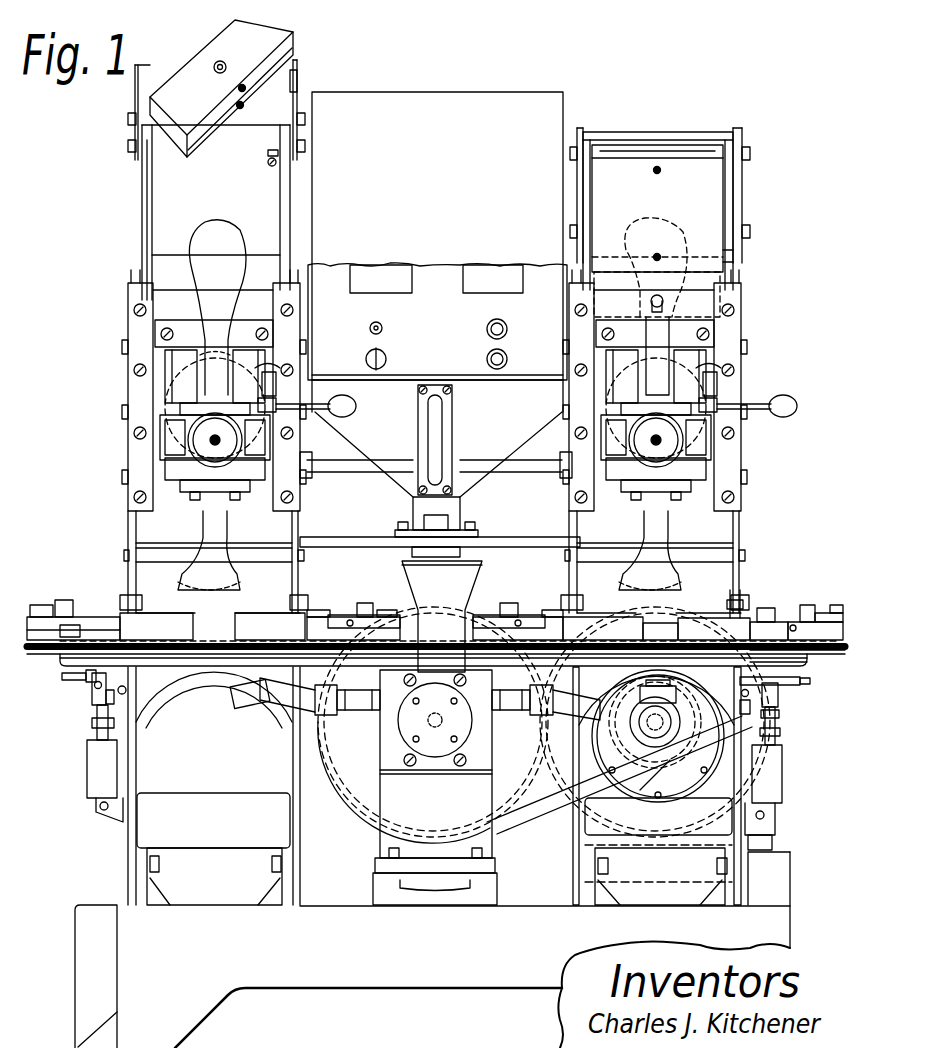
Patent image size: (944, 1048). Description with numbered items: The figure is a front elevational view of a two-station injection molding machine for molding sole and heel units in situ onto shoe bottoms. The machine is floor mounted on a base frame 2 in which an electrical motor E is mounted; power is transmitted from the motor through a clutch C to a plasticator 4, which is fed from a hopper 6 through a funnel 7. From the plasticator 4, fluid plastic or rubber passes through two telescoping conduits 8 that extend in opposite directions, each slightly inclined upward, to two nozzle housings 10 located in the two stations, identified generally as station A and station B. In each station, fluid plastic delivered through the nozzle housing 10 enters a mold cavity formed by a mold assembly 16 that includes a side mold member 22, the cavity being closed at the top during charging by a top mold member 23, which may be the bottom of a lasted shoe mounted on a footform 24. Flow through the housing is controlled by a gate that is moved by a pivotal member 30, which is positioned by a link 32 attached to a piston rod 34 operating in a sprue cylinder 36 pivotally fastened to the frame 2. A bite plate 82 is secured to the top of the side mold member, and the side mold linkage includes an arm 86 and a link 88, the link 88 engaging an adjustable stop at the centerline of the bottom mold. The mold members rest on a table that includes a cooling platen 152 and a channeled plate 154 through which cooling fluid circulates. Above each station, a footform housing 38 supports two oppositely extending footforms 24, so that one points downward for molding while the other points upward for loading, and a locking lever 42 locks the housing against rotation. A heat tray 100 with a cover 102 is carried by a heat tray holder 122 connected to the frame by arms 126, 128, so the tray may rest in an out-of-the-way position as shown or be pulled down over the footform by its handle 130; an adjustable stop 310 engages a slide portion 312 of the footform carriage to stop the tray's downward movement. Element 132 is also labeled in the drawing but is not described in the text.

The base frame 2 is at (748, 527).
The plasticator 4 is at (385, 745).
The hopper 6 is at (467, 478).
The funnel 7 is at (470, 585).
The telescoping conduits 8 is at (510, 712).
The nozzle housing 10 is at (662, 758).
The mold assembly 16 is at (763, 596).
The side mold member 22 is at (724, 610).
The top mold member 23 is at (632, 528).
The footform 24 is at (666, 536).
The pivotal member 30 is at (778, 690).
The link 32 is at (780, 708).
The piston rod 34 is at (783, 743).
The sprue cylinder 36 is at (782, 771).
The footform housing 38 is at (694, 416).
The locking lever 42 is at (784, 394).
The bite plate 82 is at (715, 628).
The arm 86 is at (845, 625).
The link 88 is at (790, 620).
The heat tray 100 is at (293, 45).
The cover 102 is at (190, 68).
The heat tray holder 122 is at (293, 80).
The arm 126 is at (733, 257).
The arm 128 is at (733, 200).
The handle 130 is at (224, 60).
The rail 132 is at (152, 183).
The cooling platen 152 is at (800, 655).
The channeled plate 154 is at (796, 668).
The adjustable stop 310 is at (268, 165).
The slide portion 312 is at (263, 255).
The station A is at (102, 318).
The station B is at (766, 326).
The clutch C is at (645, 787).
The electrical motor E is at (545, 777).